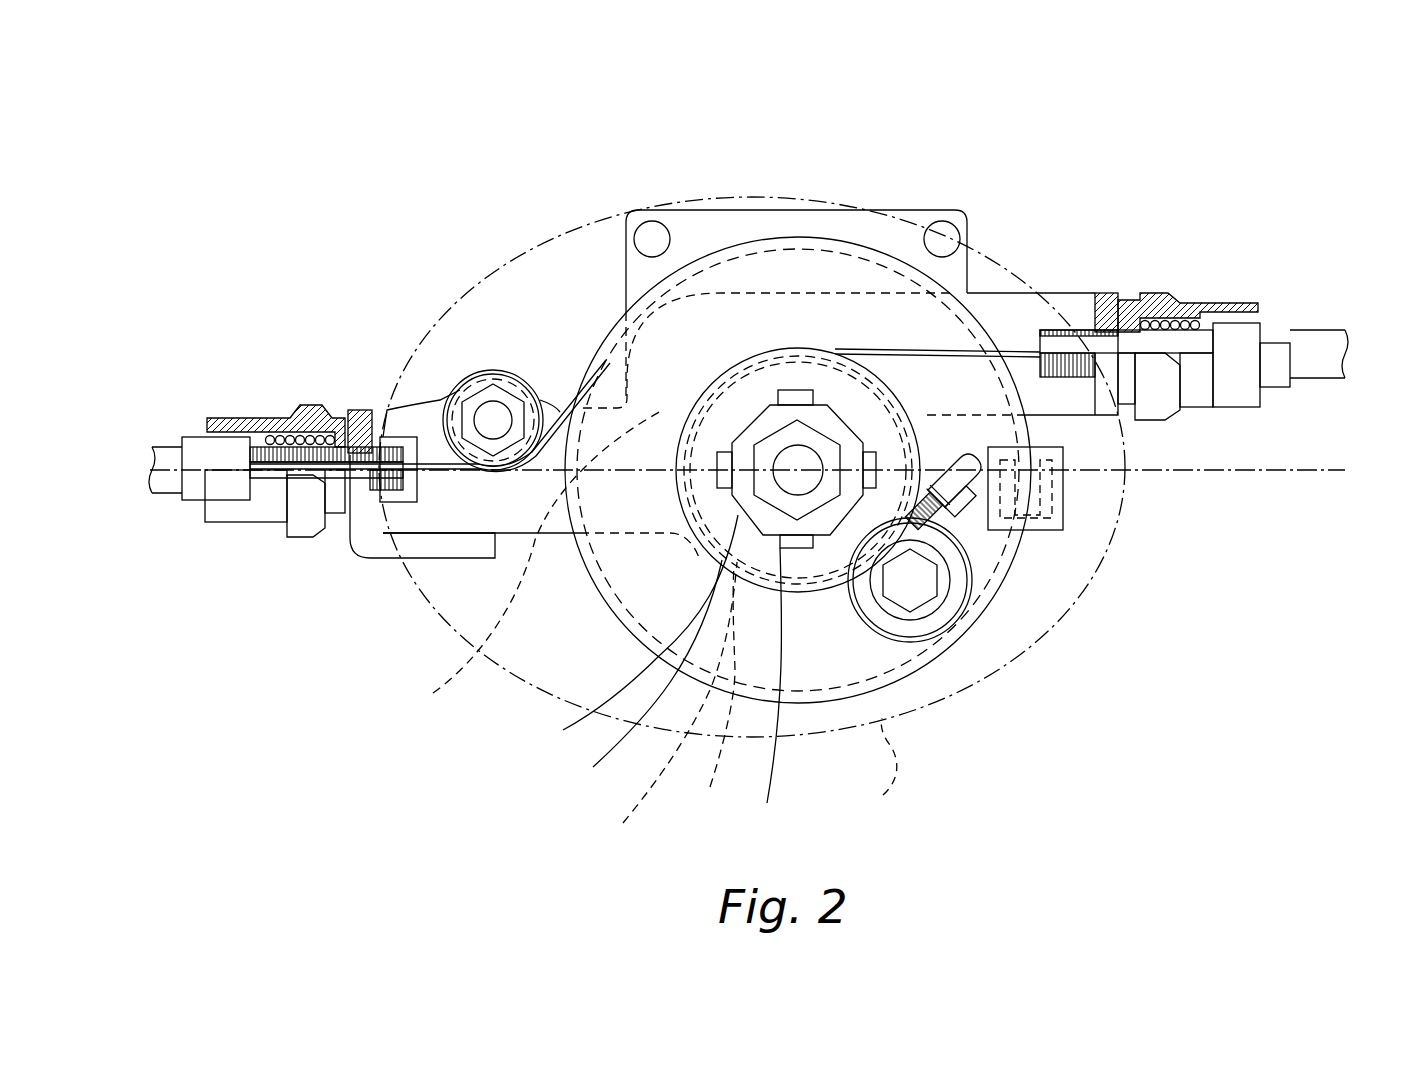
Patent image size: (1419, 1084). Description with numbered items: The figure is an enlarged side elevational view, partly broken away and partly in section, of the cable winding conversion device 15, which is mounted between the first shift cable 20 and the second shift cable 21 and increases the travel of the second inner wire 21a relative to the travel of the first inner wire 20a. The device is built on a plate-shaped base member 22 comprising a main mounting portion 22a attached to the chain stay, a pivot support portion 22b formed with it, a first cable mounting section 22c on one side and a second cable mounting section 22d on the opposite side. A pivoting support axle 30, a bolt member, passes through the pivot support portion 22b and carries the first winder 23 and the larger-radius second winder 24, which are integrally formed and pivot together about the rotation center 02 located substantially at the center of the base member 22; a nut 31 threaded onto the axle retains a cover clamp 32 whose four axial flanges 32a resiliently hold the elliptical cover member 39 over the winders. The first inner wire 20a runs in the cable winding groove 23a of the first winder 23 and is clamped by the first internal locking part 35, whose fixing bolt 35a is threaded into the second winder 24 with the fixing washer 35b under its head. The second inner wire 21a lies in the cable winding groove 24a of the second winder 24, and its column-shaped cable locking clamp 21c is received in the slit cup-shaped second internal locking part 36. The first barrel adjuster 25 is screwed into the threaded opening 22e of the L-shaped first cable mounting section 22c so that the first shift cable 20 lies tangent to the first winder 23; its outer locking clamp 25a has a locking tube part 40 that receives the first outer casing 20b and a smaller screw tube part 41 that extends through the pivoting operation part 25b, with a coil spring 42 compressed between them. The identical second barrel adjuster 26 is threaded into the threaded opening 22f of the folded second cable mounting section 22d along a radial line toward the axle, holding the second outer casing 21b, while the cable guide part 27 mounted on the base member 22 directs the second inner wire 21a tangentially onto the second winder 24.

The cable winding conversion device 15 is at (807, 176).
The first shift cable 20 is at (1340, 332).
The first inner wire 20a is at (1018, 340).
The first outer casing 20b is at (1270, 320).
The second shift cable 21 is at (156, 436).
The second inner wire 21a is at (433, 430).
The second outer casing 21b is at (170, 443).
The cable locking clamp 21c is at (1085, 582).
The base member 22 is at (880, 232).
The main mounting portion 22a is at (975, 213).
The pivot support portion 22b is at (518, 566).
The first cable mounting section 22c is at (1077, 405).
The second cable mounting section 22d is at (478, 518).
The threaded opening 22e is at (1105, 293).
The threaded opening 22f is at (353, 410).
The first winder 23 is at (637, 682).
The cable winding groove 23a is at (653, 710).
The second winder 24 is at (632, 605).
The cable winding groove 24a is at (708, 691).
The first barrel adjuster 25 is at (1152, 290).
The outer locking clamp 25a is at (1225, 303).
The pivoting operation part 25b is at (1187, 320).
The second barrel adjuster 26 is at (253, 513).
The cable guide part 27 is at (508, 360).
The pivoting support axle 30 is at (762, 696).
The nut 31 is at (797, 466).
The cover clamp 32 is at (827, 537).
The axial flanges 32a is at (620, 640).
The first internal locking part 35 is at (950, 625).
The fixing bolt 35a is at (913, 640).
The fixing washer 35b is at (968, 537).
The second internal locking part 36 is at (1063, 510).
The elliptical cover member 39 is at (897, 779).
The locking tube part 40 is at (1257, 337).
The screw tube part 41 is at (1130, 365).
The coil spring 42 is at (1162, 337).
The rotation center 02 is at (801, 466).